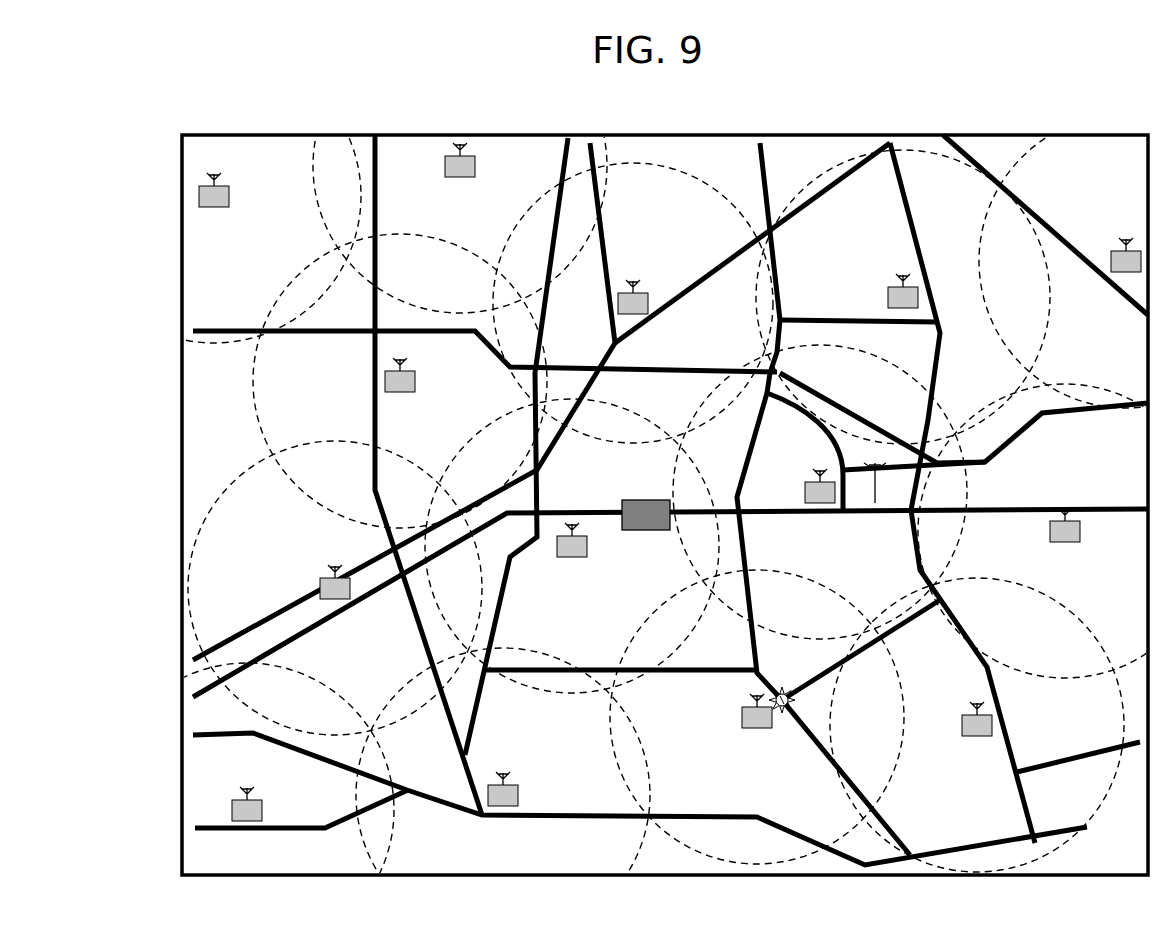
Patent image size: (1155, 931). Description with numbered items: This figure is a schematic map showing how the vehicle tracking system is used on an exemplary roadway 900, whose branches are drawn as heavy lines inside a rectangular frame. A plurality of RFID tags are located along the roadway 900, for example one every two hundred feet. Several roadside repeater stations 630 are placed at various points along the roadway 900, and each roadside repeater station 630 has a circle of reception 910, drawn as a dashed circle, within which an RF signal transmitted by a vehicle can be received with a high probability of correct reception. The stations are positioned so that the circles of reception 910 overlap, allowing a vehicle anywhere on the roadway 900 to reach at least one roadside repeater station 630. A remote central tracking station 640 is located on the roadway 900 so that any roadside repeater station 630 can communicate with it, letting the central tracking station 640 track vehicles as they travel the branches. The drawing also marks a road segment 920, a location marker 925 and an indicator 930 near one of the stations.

The roadway 900 is at (1043, 90).
The circle of reception 910 is at (688, 172).
The roadside repeater station 630 is at (648, 305).
The central tracking station 640 is at (655, 531).
The route / road segment 920 is at (870, 648).
The location marker 925 is at (786, 710).
The event / incident indicator 930 is at (785, 680).